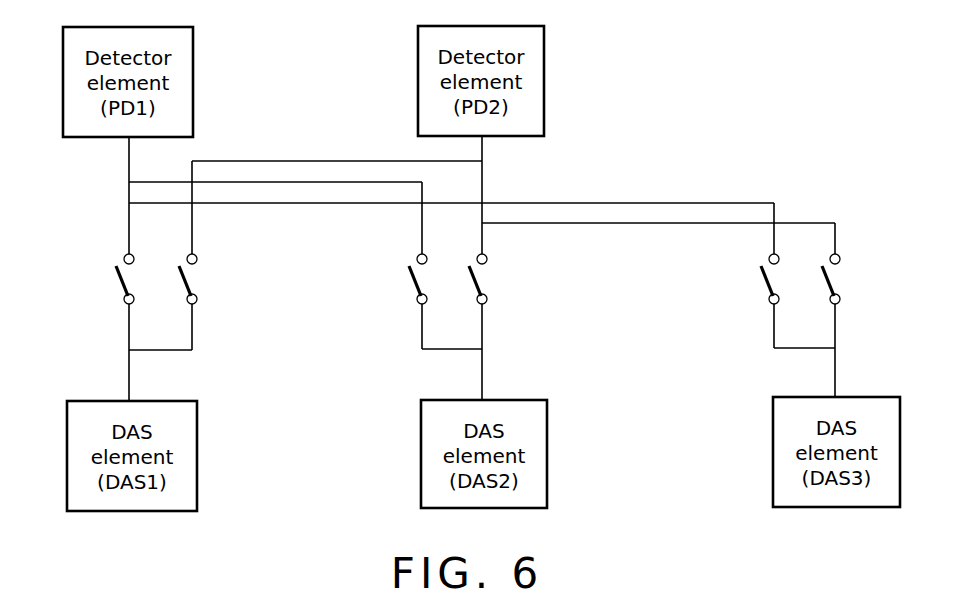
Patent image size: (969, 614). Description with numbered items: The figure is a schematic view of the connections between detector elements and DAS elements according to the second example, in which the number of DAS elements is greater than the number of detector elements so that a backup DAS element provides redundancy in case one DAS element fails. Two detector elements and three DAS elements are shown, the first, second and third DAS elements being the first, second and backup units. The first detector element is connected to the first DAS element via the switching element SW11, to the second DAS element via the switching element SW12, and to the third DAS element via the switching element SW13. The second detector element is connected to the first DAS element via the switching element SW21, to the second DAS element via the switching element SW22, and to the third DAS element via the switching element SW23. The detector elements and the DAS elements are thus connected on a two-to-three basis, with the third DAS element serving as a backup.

The switching element SW11 is at (90, 279).
The switching element SW21 is at (222, 279).
The switching element SW12 is at (385, 279).
The switching element SW22 is at (513, 279).
The switching element SW13 is at (735, 279).
The switching element SW23 is at (866, 279).